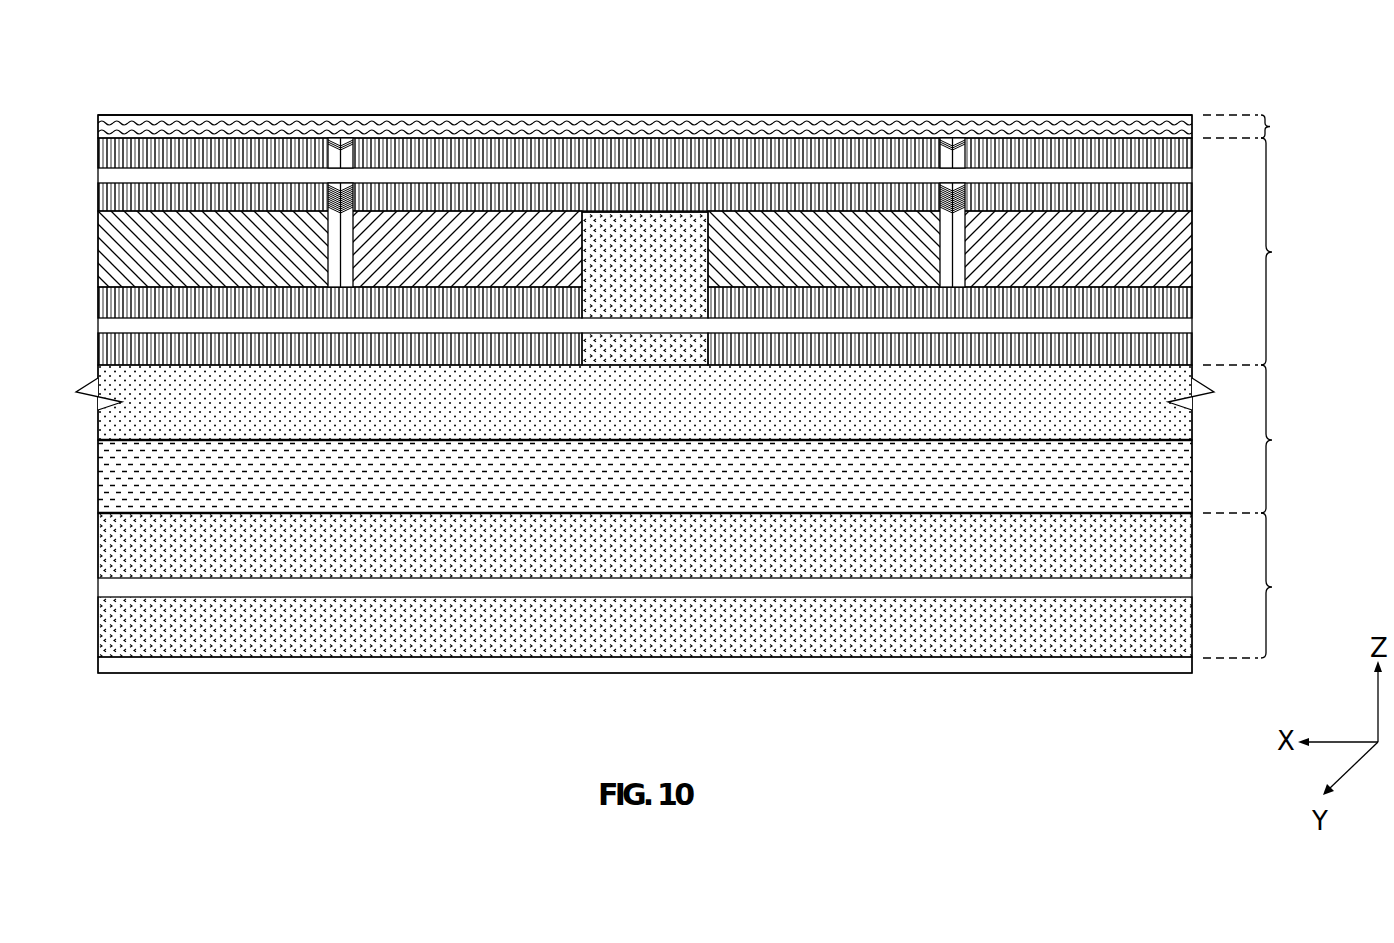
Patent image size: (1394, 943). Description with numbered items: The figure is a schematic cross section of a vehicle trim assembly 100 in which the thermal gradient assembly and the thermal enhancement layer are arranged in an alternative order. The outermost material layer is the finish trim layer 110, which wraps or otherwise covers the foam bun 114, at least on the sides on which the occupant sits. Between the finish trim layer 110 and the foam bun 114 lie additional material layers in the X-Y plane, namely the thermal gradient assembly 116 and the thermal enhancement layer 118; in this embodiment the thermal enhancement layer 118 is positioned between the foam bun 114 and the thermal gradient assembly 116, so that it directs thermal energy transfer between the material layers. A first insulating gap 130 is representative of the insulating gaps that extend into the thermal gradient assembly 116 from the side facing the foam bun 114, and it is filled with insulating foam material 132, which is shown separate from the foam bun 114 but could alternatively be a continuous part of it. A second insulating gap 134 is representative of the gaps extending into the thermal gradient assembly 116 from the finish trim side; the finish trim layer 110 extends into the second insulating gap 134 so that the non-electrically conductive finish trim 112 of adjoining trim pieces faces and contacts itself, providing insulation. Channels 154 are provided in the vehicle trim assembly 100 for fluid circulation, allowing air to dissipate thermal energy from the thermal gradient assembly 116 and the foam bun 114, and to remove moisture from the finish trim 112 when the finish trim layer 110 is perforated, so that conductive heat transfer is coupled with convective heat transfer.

The vehicle trim assembly 100 is at (104, 98).
The finish trim layer 110 is at (706, 130).
The finish trim 112 is at (1072, 116).
The foam bun 114 is at (713, 585).
The thermal gradient assembly 116 is at (710, 251).
The thermal enhancement layer 118 is at (702, 439).
The first insulating gap 130 is at (632, 204).
The insulating foam material 132 is at (655, 212).
The second insulating gap 134 is at (316, 158).
The channels 154 is at (158, 678).